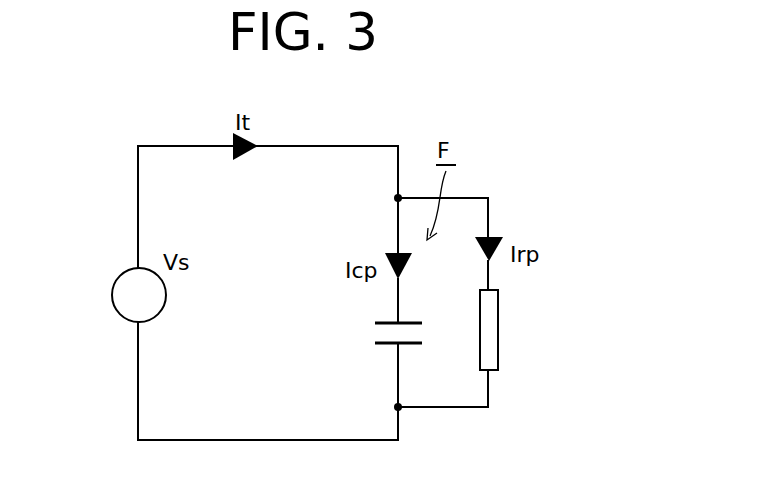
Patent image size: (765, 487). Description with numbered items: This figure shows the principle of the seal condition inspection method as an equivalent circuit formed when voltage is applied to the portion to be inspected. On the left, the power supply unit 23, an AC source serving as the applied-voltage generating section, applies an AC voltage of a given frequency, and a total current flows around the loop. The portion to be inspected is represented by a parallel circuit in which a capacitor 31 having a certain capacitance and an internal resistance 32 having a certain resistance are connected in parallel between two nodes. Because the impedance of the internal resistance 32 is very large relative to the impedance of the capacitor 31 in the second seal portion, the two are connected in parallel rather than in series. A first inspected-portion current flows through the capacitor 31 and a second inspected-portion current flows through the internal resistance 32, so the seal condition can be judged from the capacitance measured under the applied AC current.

The power supply unit 23 is at (112, 292).
The capacitor 31 is at (385, 350).
The internal resistance 32 is at (498, 358).